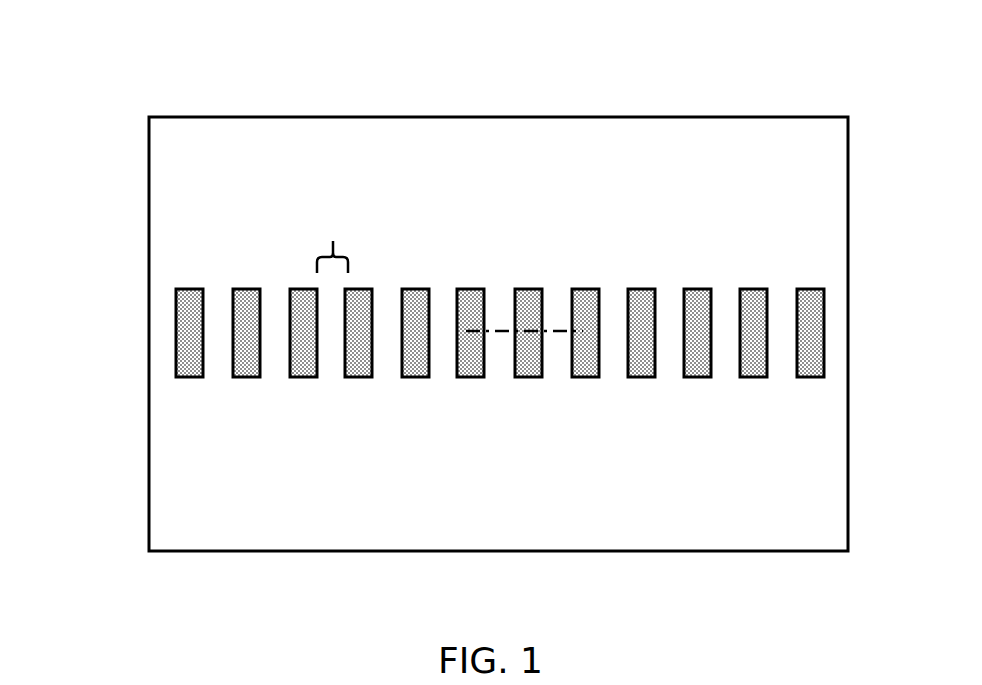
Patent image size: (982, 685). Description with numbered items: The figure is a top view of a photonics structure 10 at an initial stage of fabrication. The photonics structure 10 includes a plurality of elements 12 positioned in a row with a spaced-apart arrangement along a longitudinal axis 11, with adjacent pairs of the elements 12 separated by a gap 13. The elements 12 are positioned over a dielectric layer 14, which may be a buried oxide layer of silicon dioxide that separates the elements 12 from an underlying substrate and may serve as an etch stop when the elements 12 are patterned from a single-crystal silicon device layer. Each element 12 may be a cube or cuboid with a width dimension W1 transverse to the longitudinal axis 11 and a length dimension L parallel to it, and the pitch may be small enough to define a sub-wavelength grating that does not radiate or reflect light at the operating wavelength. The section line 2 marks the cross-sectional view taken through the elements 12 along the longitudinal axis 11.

The photonics structure 10 is at (118, 80).
The longitudinal axis 11 is at (533, 331).
The elements 12 is at (305, 352).
The gap 13 is at (332, 243).
The dielectric layer 14 is at (178, 503).
The width dimension W1 is at (246, 440).
The length dimension L is at (363, 172).
The section line for FIG. 2 is at (535, 75).